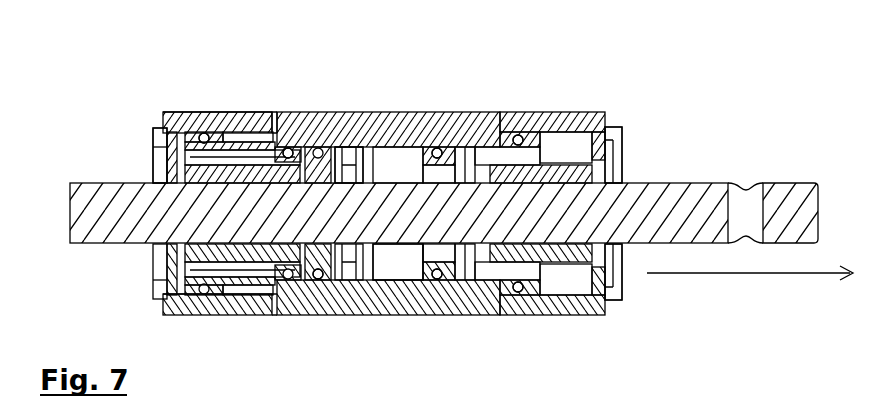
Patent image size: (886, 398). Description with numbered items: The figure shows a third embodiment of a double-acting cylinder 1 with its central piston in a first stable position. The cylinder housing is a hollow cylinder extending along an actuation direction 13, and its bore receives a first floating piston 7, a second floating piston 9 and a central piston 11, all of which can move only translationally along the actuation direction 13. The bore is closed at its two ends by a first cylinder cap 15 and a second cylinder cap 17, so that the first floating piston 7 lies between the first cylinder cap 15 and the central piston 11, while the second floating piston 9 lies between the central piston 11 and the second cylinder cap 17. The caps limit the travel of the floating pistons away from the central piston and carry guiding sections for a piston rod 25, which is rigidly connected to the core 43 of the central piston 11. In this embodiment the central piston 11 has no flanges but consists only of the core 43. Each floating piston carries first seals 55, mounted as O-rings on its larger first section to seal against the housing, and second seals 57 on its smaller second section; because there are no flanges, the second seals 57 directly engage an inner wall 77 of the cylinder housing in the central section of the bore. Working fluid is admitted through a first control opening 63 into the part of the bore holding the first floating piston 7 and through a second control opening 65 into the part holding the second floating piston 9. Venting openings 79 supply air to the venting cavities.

The double-acting cylinder 1 is at (118, 118).
The first floating piston 7 is at (240, 282).
The second floating piston 9 is at (462, 282).
The central piston 11 is at (355, 112).
The actuation direction 13 is at (770, 276).
The first cylinder cap 15 is at (163, 165).
The second cylinder cap 17 is at (622, 157).
The piston rod 25 is at (783, 193).
The core 43 is at (318, 275).
The first seals 55 is at (200, 133).
The second seals 57 is at (292, 128).
The first control opening 63 is at (186, 114).
The second control opening 65 is at (620, 128).
The inner wall 77 is at (408, 282).
The venting openings 79 is at (288, 148).